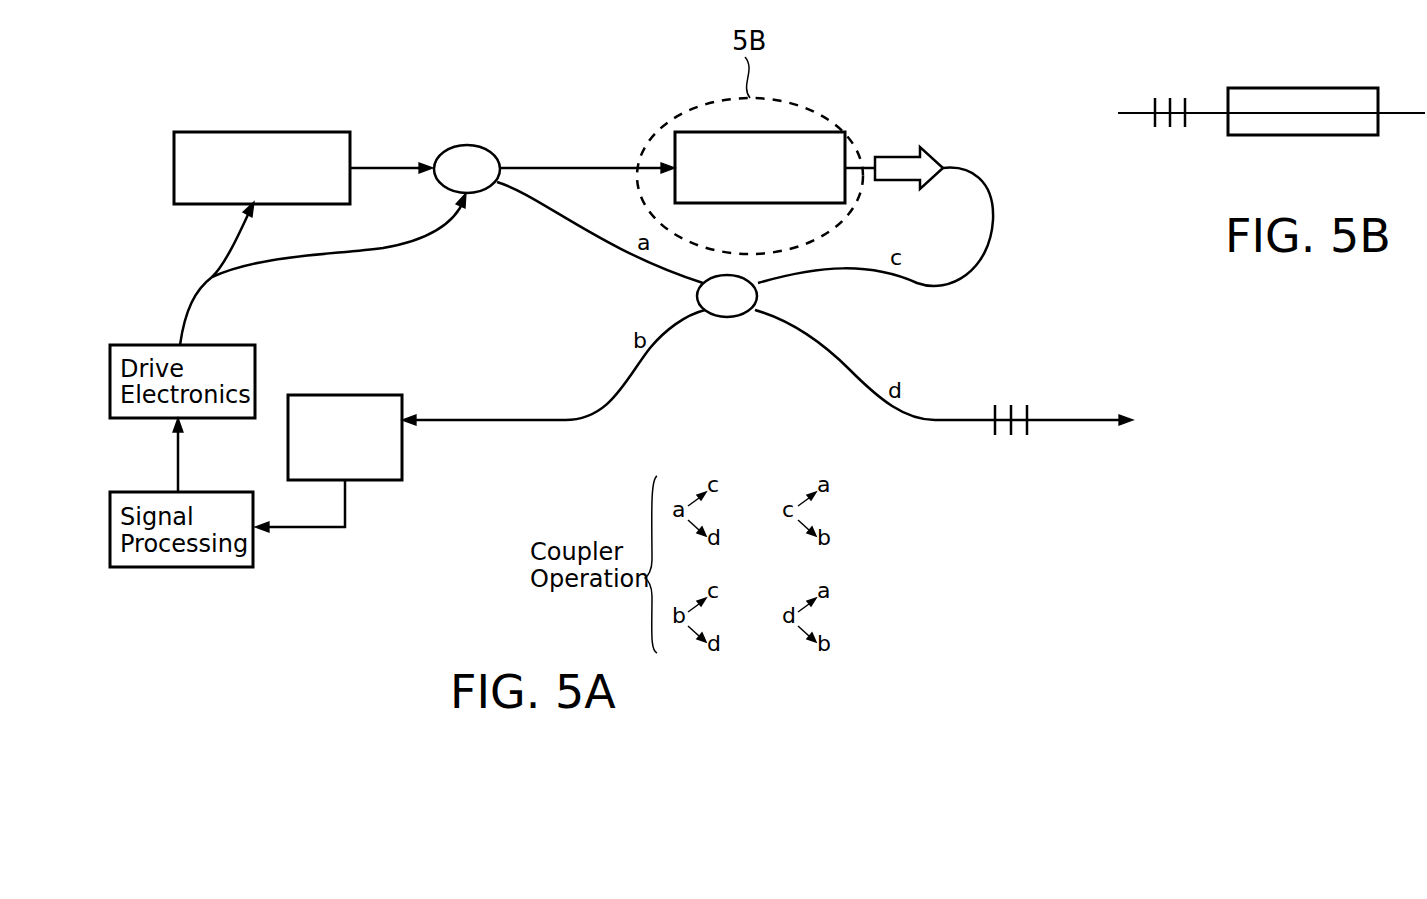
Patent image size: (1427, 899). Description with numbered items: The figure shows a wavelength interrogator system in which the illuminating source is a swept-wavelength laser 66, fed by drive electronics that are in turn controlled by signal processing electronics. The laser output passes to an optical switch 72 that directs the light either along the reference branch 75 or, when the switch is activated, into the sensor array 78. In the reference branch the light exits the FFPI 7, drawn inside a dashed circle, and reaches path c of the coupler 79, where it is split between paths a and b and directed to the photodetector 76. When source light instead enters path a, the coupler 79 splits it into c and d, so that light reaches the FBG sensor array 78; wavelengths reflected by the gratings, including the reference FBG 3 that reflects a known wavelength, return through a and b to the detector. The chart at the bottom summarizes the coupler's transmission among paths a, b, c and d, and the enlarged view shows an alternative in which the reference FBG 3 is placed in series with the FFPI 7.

In FIG. 5A, the swept-wavelength laser 66 is at (200, 188).
In FIG. 5A, the optical switch 72 is at (463, 151).
In FIG. 5A, the reference branch 75 is at (587, 156).
In FIG. 5A, the FFPI 7 is at (710, 185).
In FIG. 5B, the FFPI 7 is at (1263, 120).
In FIG. 5A, the coupler 79 is at (716, 304).
In FIG. 5A, the sensor array 78 is at (1026, 387).
In FIG. 5A, the reference FBG 3 is at (1000, 436).
In FIG. 5B, the reference FBG 3 is at (1163, 127).
In FIG. 5A, the photodetector 76 is at (381, 468).